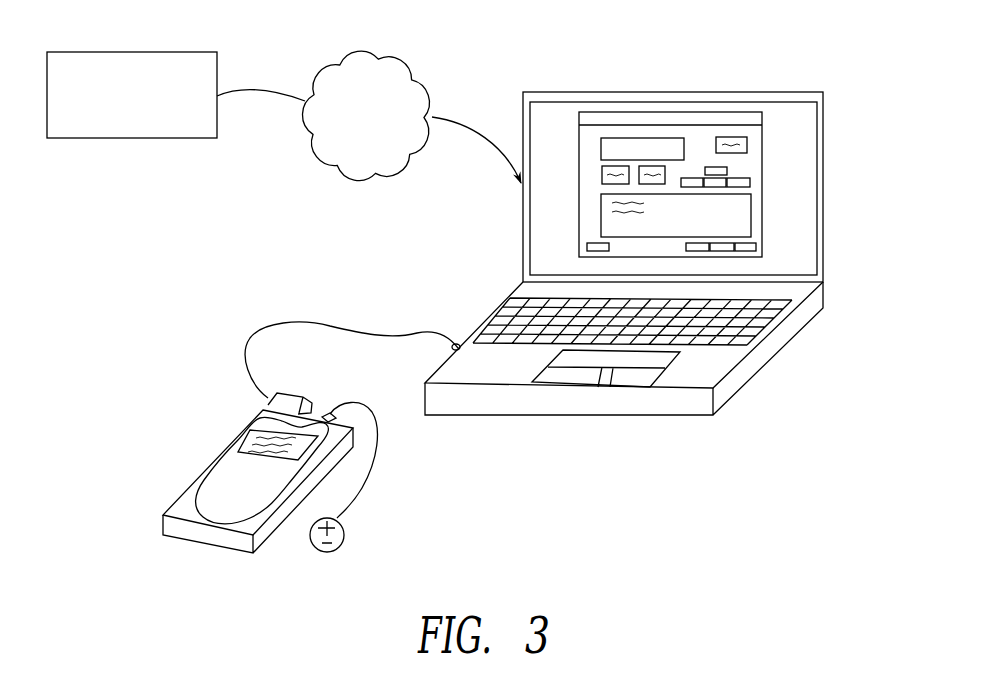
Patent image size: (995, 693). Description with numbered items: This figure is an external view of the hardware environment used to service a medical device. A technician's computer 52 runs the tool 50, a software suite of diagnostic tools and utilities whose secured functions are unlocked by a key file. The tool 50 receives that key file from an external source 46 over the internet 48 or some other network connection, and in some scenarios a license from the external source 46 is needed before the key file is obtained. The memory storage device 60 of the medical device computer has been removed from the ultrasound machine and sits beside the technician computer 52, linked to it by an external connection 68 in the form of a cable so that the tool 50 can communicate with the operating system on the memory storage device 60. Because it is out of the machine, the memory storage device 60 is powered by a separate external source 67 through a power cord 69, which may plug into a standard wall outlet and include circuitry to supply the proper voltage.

The external source 46 is at (148, 42).
The internet 48 is at (381, 45).
The tool 50 is at (776, 151).
The technician's computer 52 is at (567, 78).
The memory storage device 60 is at (220, 451).
The external source 67 is at (333, 556).
The external connection 68 is at (313, 316).
The power cord 69 is at (372, 477).